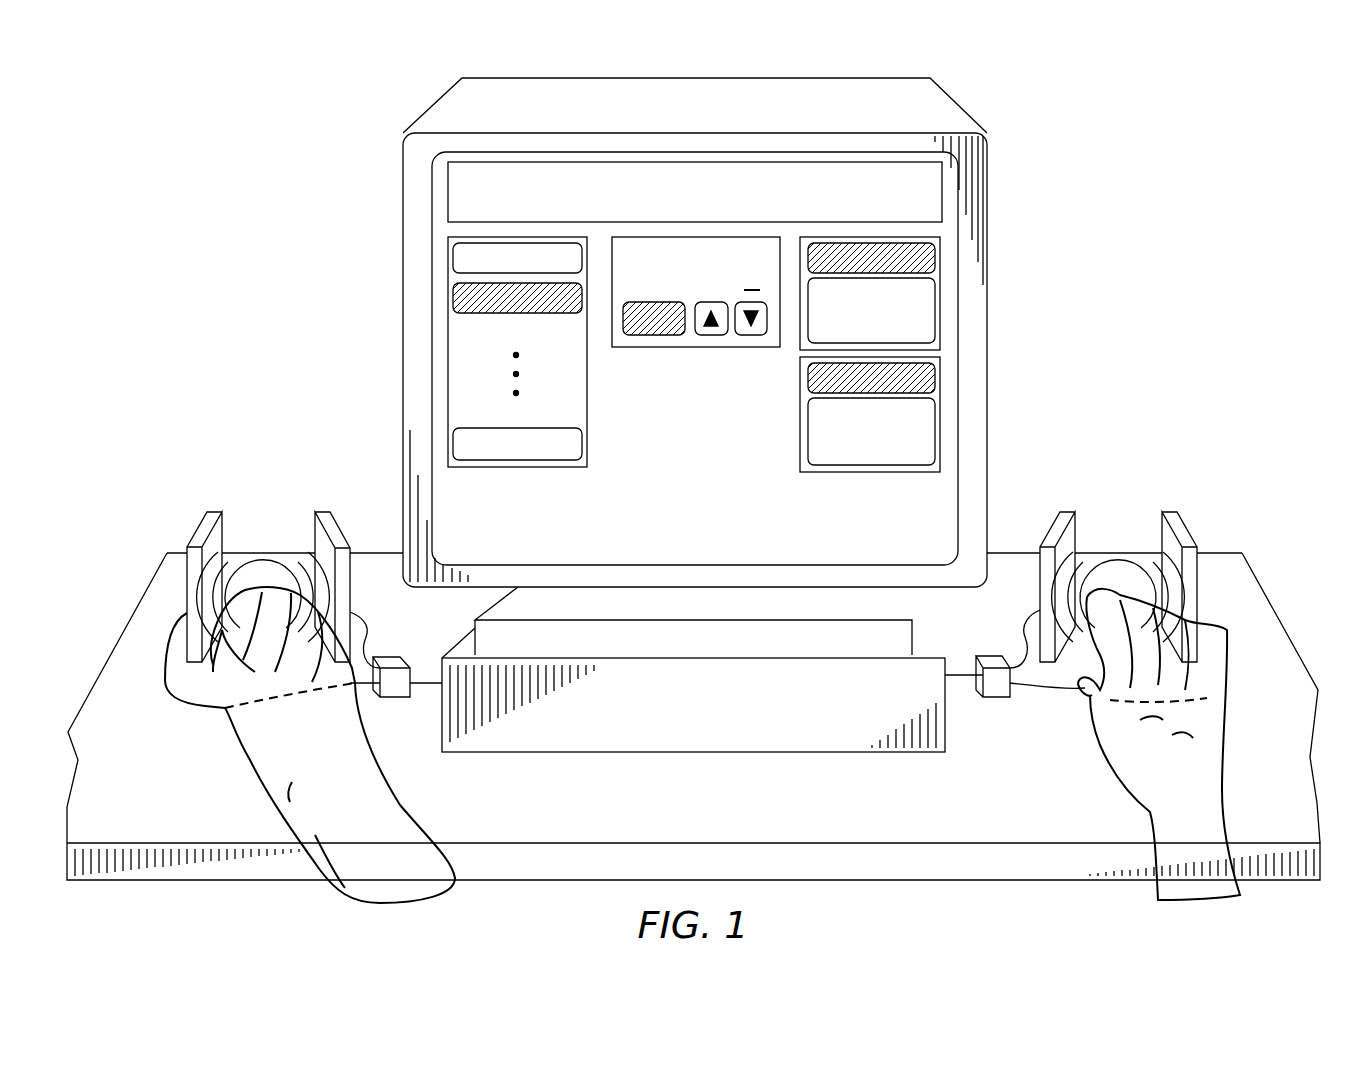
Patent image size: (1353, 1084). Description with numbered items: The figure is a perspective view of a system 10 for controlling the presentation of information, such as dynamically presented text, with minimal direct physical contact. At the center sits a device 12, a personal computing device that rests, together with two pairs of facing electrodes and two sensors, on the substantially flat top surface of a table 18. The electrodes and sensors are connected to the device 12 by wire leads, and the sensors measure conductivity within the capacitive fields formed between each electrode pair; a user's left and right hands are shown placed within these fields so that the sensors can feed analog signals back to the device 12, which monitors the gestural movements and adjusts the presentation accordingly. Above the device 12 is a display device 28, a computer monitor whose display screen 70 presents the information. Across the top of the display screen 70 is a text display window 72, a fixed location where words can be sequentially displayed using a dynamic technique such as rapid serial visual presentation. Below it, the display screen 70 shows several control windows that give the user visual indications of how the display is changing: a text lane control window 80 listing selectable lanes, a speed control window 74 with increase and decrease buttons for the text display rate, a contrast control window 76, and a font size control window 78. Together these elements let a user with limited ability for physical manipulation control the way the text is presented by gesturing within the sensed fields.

The system 10 is at (283, 115).
The device 12 is at (693, 669).
The table 18 is at (1243, 593).
The display device 28 is at (985, 152).
The display screen 70 is at (697, 328).
The text display window 72 is at (770, 186).
The speed control window 74 is at (780, 355).
The contrast control window 76 is at (945, 237).
The font size control window 78 is at (945, 357).
The text lane control window 80 is at (443, 238).